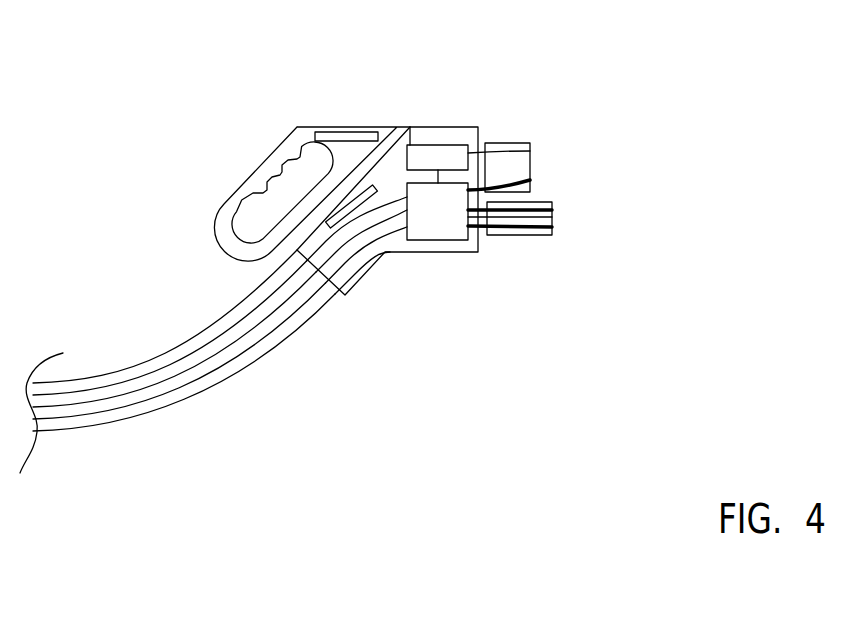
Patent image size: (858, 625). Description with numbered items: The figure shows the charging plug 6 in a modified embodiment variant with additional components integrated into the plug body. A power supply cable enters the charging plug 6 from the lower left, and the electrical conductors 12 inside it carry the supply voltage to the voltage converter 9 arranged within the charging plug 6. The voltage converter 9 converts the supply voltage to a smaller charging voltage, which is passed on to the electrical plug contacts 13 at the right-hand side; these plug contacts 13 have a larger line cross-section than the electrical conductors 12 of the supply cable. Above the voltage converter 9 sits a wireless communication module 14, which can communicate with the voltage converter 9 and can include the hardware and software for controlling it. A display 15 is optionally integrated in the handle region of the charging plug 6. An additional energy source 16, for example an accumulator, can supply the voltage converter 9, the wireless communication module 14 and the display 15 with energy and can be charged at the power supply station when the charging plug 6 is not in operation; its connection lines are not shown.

The charging plug 6 is at (437, 128).
The voltage converter 9 is at (433, 227).
The electrical conductors 12 is at (165, 397).
The electrical plug contacts 13 is at (530, 192).
The wireless communication module 14 is at (459, 151).
The display 15 is at (350, 136).
The energy source 16 is at (330, 227).